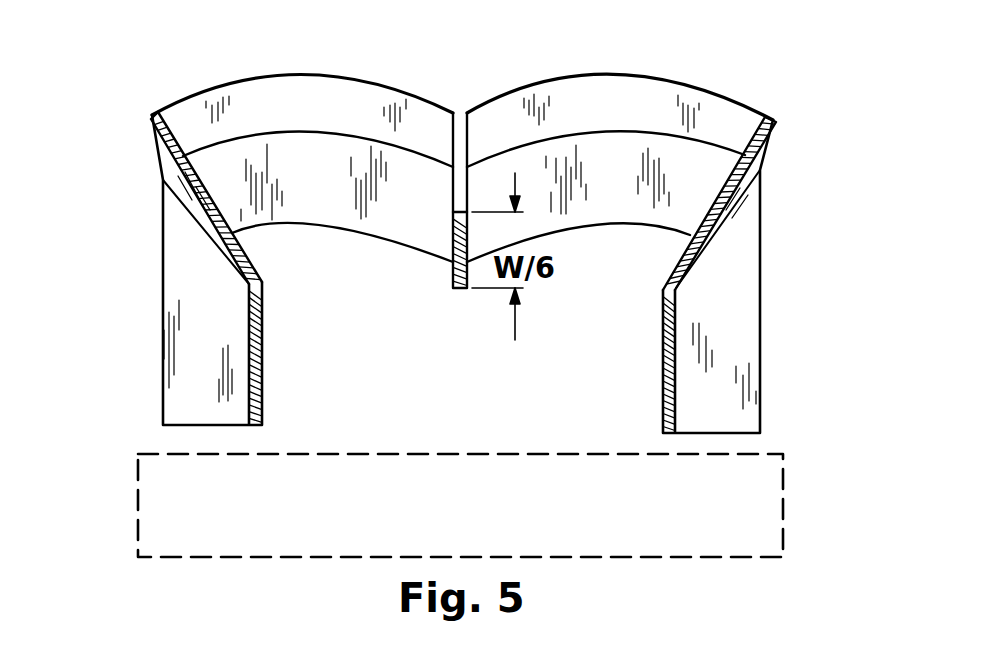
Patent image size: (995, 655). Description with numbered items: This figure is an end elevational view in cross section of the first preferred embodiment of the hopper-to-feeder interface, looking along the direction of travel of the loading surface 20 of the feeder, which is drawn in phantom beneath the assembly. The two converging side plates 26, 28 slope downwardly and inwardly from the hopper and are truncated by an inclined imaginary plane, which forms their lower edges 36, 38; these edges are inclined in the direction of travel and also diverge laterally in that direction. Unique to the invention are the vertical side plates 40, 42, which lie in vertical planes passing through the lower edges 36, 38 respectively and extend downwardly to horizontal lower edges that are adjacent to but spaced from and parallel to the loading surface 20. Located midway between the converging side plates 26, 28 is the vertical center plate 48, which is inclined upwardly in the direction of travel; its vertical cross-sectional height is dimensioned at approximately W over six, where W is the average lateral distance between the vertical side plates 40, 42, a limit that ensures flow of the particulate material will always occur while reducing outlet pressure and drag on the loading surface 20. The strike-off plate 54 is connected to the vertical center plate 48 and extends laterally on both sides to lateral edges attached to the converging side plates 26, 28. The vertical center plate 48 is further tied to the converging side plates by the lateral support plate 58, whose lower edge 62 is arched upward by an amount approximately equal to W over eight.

The loading surface 20 is at (447, 454).
The converging side plate 26 is at (757, 168).
The converging side plate 28 is at (170, 163).
The lower edge of converging side plate 36 is at (722, 238).
The lower edge of converging side plate 38 is at (200, 217).
The vertical side plate 40 is at (713, 392).
The vertical side plate 42 is at (203, 333).
The vertical center plate 48 is at (477, 117).
The strike-off plate 54 is at (362, 100).
The lateral support plate 58 is at (275, 158).
The lower edge of lateral support plate 62 is at (697, 270).